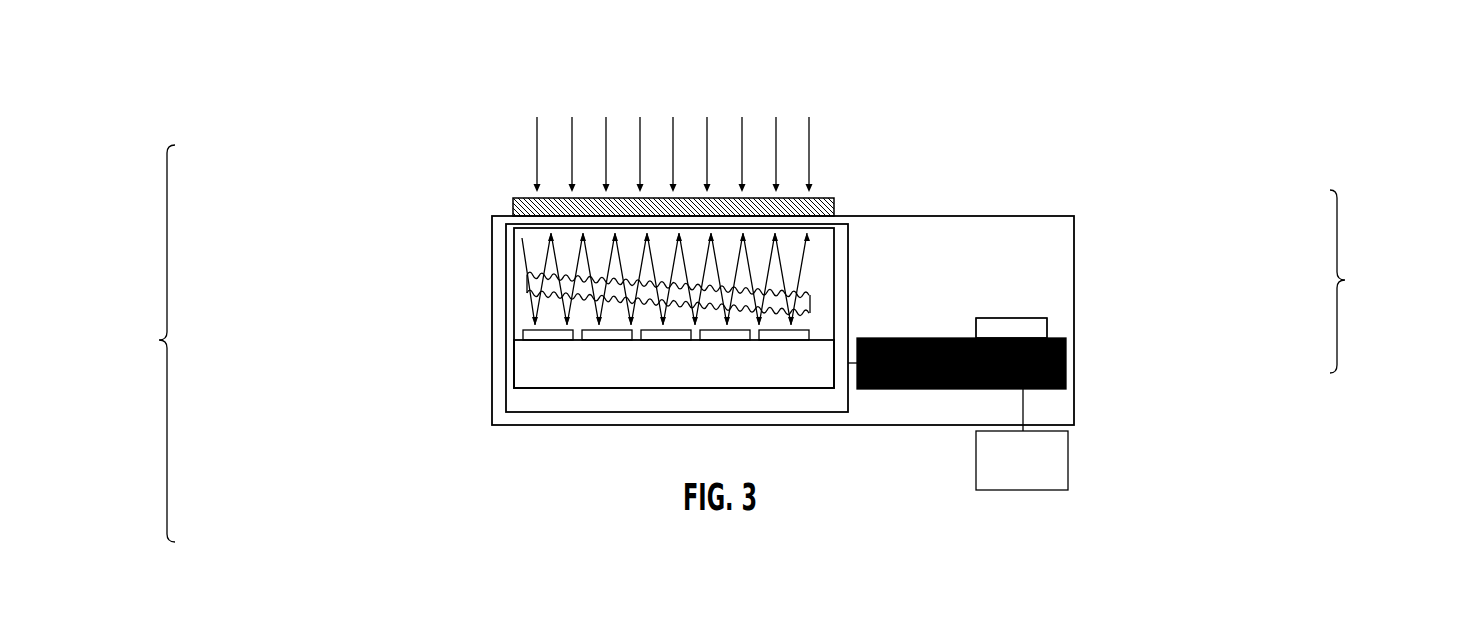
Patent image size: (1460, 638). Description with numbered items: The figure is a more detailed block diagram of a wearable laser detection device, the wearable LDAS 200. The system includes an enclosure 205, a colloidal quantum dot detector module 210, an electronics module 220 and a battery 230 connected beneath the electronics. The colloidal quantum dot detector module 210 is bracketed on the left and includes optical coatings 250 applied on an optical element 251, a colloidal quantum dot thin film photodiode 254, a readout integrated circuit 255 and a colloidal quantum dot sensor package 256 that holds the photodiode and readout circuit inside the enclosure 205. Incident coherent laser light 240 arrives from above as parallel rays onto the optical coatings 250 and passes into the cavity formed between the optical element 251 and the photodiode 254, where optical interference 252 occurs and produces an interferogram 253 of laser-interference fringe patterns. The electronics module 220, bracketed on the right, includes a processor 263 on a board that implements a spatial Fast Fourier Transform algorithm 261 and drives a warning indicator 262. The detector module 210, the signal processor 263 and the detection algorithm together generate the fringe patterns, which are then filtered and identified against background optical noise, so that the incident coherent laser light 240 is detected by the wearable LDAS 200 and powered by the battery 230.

The wearable LDAS 200 is at (247, 100).
The colloidal quantum dot detector module 210 is at (127, 404).
The electronics module 220 is at (1413, 359).
The enclosure 205 is at (1074, 392).
The battery 230 is at (1038, 472).
The incident coherent laser light 240 is at (690, 109).
The optical coatings 250 is at (513, 201).
The optical element 251 is at (506, 227).
The optical interference 252 is at (543, 253).
The interferogram 253 is at (528, 299).
The colloidal quantum dot thin film photodiode 254 is at (505, 393).
The readout integrated circuit 255 is at (523, 335).
The colloidal quantum dot sensor package 256 is at (512, 366).
The spatial Fast Fourier Transform algorithm 261 is at (1032, 338).
The warning indicator 262 is at (1232, 309).
The processor 263 is at (1066, 360).